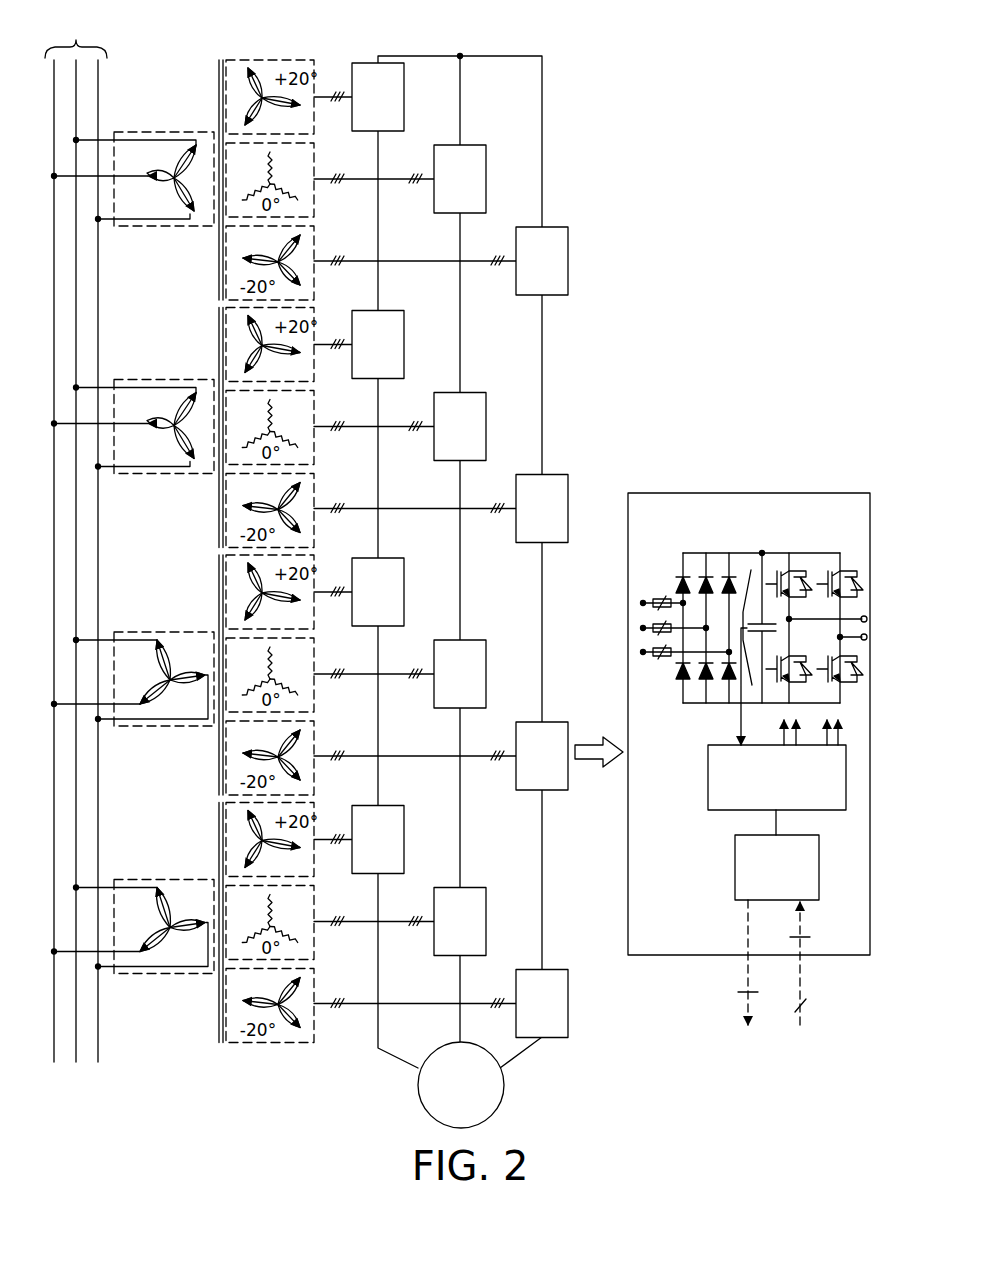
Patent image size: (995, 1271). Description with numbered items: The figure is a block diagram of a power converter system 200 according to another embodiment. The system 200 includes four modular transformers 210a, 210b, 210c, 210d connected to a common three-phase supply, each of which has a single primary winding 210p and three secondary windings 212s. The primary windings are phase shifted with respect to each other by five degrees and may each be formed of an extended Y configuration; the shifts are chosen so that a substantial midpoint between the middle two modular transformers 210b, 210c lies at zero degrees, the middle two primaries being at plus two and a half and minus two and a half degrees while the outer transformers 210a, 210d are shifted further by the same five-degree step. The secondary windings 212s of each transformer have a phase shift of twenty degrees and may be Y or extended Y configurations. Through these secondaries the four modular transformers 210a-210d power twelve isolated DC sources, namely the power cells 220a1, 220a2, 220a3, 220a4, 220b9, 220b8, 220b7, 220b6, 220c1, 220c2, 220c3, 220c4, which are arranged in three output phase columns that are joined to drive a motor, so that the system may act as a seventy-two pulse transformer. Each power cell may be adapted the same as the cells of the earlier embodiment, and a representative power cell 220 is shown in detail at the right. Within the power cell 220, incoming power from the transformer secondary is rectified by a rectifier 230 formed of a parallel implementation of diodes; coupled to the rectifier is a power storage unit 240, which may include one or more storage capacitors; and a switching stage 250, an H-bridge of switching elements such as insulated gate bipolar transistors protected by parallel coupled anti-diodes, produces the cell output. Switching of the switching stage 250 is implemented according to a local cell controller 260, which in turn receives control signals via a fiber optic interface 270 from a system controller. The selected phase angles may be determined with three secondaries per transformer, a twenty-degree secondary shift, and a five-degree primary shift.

The system 200 is at (176, 23).
The modular transformer 210a is at (170, 132).
The modular transformer 210b is at (133, 451).
The modular transformer 210c is at (133, 702).
The modular transformer 210d is at (133, 950).
The primary winding 210p is at (190, 217).
The secondary windings 212s is at (268, 58).
The power cell 220a1 is at (361, 63).
The power cell 220a2 is at (401, 322).
The power cell 220a3 is at (401, 569).
The power cell 220a4 is at (401, 817).
The power cell 220b9 is at (482, 145).
The power cell 220b8 is at (484, 404).
The power cell 220b7 is at (484, 651).
The power cell 220b6 is at (484, 899).
The power cell 220c1 is at (565, 227).
The power cell 220c2 is at (566, 486).
The power cell 220c3 is at (566, 733).
The power cell 220c4 is at (566, 981).
The power cell 220 is at (687, 957).
The rectifier 230 is at (504, 1082).
The power storage unit 240 is at (793, 542).
The switching stage 250 is at (862, 542).
The local cell controller 260 is at (708, 780).
The fiber optic interface 270 is at (735, 870).